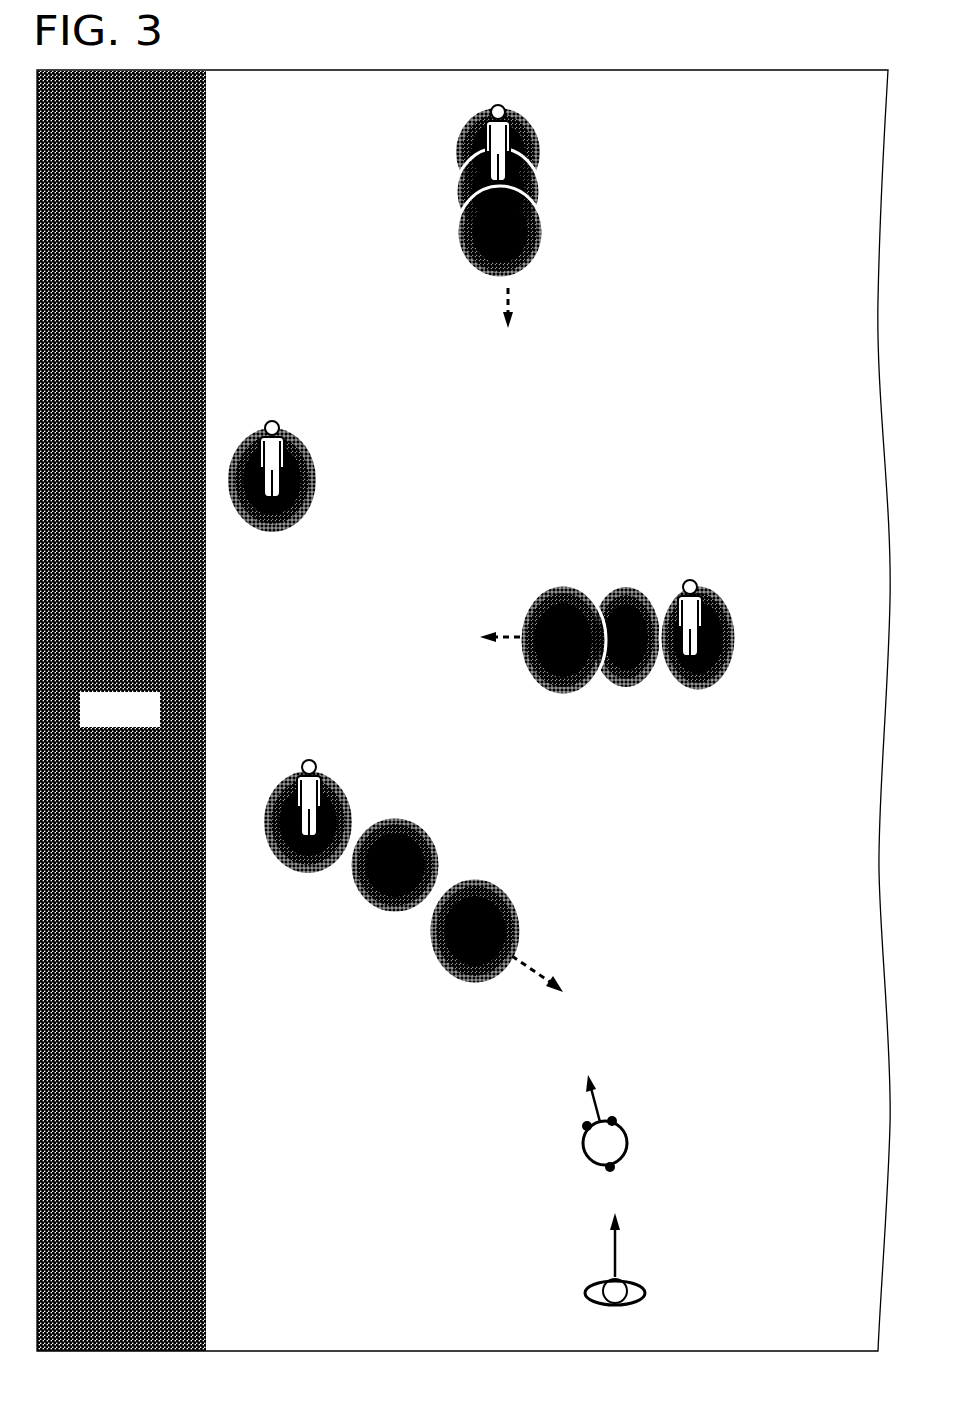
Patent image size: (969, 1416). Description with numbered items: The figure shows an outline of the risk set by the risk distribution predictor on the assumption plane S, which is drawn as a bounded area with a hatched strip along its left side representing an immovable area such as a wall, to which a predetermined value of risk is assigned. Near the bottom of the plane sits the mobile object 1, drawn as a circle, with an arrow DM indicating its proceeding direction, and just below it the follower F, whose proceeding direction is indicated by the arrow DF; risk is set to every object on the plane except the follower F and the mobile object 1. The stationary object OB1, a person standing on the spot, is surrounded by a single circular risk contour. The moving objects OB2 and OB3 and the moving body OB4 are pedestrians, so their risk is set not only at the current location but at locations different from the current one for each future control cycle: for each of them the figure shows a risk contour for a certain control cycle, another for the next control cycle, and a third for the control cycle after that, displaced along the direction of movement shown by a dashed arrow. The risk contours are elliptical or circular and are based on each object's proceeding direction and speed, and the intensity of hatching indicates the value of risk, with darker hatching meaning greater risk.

The mobile object 1 is at (627, 1143).
The proceeding direction of the mobile object DM is at (597, 1103).
The proceeding direction of the follower DF is at (617, 1248).
The follower F is at (645, 1293).
The assumption plane S is at (740, 425).
The stationary object OB1 is at (272, 419).
The moving object OB2 is at (309, 759).
The moving object OB3 is at (690, 579).
The moving body OB4 is at (503, 104).